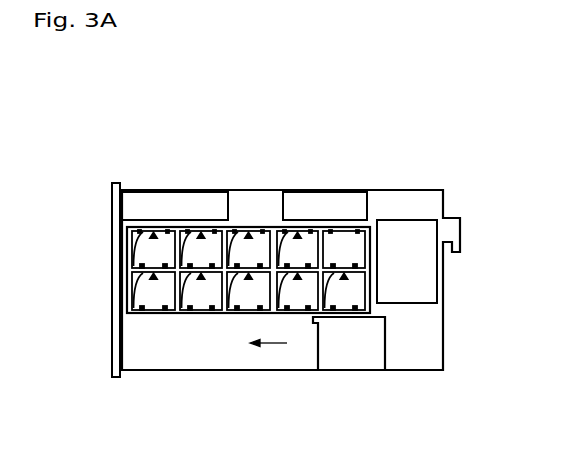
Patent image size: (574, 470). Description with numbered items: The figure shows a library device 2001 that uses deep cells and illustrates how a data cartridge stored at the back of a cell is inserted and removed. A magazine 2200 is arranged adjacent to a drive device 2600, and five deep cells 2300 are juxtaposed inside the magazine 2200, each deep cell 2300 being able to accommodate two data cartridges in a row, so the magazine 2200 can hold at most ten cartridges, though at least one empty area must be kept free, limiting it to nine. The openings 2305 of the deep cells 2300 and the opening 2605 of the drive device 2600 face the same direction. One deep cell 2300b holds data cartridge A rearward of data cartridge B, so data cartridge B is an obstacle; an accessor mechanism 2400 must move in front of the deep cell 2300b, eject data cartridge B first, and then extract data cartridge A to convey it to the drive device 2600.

The display apparatus 2001 is at (318, 92).
The magazine 2200 is at (128, 298).
The deep cell 2300 is at (371, 227).
The deep cell 2300b is at (203, 313).
The opening 2305 is at (298, 315).
The accessor mechanism 2400 is at (358, 352).
The drive device 2600 is at (415, 220).
The opening 2605 is at (412, 303).